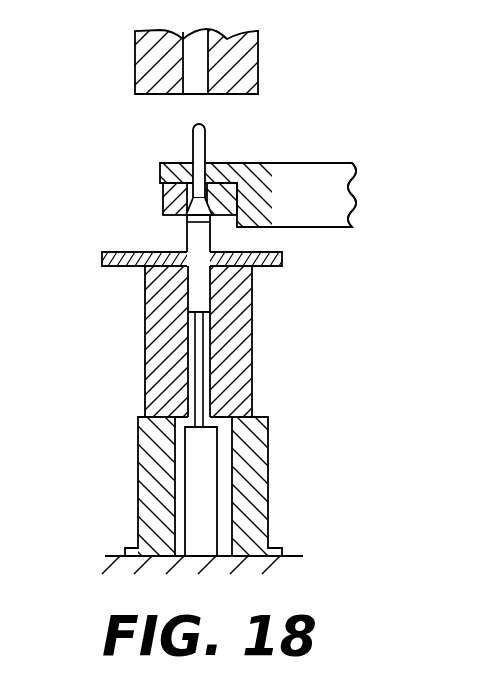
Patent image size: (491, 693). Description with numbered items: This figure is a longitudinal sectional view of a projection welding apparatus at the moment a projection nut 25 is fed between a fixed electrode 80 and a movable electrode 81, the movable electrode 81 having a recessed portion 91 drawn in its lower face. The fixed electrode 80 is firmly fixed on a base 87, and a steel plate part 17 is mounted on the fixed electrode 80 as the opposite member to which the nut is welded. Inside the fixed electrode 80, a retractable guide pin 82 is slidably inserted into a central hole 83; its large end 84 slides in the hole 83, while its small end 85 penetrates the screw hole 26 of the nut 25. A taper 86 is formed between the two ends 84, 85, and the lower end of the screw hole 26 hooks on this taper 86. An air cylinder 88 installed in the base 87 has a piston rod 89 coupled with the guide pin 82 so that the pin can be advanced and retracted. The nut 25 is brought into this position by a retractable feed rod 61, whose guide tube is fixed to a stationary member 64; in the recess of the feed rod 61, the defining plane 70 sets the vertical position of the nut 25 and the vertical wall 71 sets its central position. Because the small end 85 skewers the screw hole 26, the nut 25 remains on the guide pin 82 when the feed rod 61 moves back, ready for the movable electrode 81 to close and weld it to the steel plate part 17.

The steel plate part 17 is at (120, 267).
The projection nut 25 is at (170, 203).
The screw hole 26 is at (180, 195).
The feed rod 61 is at (335, 162).
The stationary member 64 is at (293, 553).
The defining plane 70 is at (270, 197).
The vertical wall 71 is at (218, 222).
The fixed electrode 80 is at (253, 357).
The movable electrode 81 is at (258, 57).
The guide pin 82 is at (211, 296).
The central hole 83 is at (185, 298).
The large end 84 is at (203, 278).
The small end 85 is at (205, 150).
The taper 86 is at (190, 237).
The base 87 is at (268, 453).
The air cylinder 88 is at (208, 500).
The piston rod 89 is at (197, 382).
The slot 91 is at (196, 82).